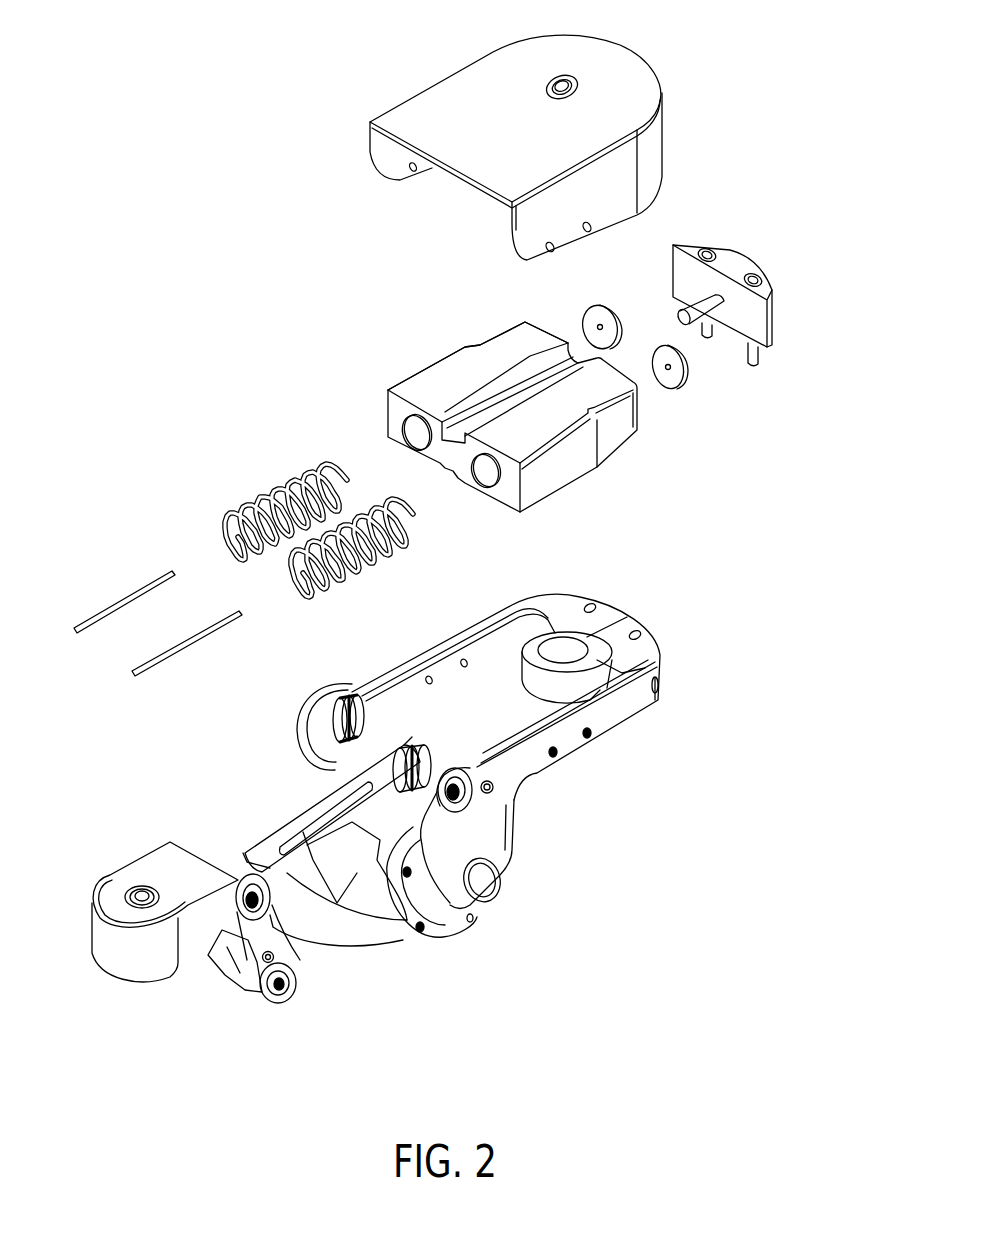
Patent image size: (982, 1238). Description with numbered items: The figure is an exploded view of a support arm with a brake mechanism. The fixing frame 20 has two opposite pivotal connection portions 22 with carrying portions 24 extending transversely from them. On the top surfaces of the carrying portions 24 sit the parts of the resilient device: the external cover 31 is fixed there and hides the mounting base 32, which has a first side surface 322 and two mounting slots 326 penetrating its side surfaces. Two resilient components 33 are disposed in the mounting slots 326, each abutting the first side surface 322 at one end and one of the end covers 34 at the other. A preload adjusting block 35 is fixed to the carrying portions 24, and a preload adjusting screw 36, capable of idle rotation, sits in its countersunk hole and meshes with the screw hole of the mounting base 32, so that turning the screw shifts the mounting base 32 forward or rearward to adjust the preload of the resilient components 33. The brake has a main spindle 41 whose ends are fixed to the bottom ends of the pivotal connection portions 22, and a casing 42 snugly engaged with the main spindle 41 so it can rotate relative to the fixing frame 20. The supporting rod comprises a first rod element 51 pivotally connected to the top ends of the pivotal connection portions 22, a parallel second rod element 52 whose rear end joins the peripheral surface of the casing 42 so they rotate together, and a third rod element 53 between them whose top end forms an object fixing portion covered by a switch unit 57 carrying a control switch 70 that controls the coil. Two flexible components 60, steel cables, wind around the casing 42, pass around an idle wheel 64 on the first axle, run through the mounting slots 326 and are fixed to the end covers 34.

The fixing frame 20 is at (575, 855).
The pivotal connection portions 22 is at (497, 828).
The carrying portions 24 is at (572, 747).
The external cover 31 is at (623, 68).
The mounting base 32 is at (570, 468).
The first side surface 322 is at (397, 408).
The mounting slots 326 is at (417, 428).
The resilient components 33 is at (248, 503).
The end covers 34 is at (590, 317).
The preload adjusting block 35 is at (747, 318).
The preload adjusting screw 36 is at (710, 307).
The main spindle 41 is at (480, 877).
The casing 42 is at (440, 922).
The first rod element 51 is at (280, 808).
The second rod element 52 is at (323, 940).
The third rod element 53 is at (263, 930).
The switch unit 57 is at (123, 960).
The flexible components 60 is at (137, 588).
The idle wheel 64 is at (403, 770).
The control switch 70 is at (140, 893).